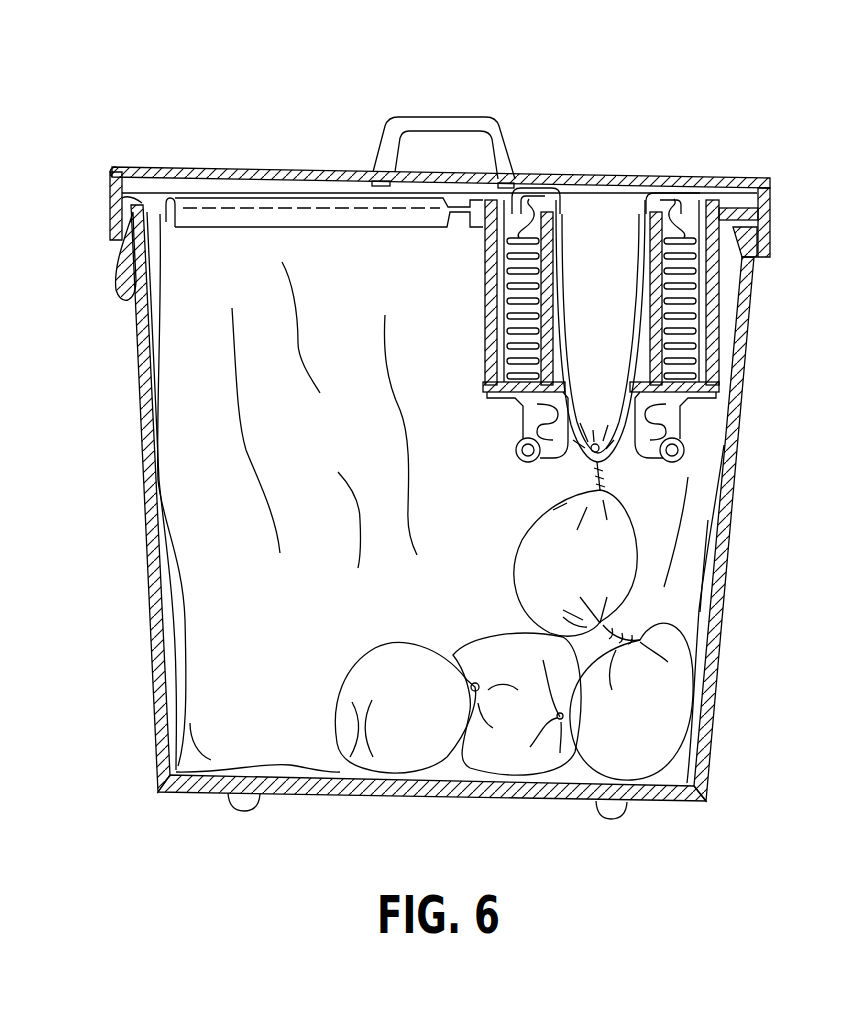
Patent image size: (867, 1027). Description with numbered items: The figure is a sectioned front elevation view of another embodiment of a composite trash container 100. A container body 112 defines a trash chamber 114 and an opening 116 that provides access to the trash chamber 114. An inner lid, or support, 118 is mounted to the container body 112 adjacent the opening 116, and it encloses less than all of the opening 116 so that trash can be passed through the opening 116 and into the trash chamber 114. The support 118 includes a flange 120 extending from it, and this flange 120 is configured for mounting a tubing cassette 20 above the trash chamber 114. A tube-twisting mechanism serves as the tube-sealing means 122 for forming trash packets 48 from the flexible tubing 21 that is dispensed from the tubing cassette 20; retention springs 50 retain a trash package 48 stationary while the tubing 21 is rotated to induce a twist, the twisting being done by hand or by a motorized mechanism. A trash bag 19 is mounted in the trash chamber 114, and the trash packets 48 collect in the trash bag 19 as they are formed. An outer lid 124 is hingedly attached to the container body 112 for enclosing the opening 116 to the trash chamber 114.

The composite trash container 100 is at (760, 131).
The outer lid 124 is at (153, 168).
The inner lid 118 is at (313, 194).
The flange 120 is at (493, 296).
The tubing cassette 20 is at (699, 194).
The flexible tubing 21 is at (612, 241).
The tube-sealing means 122 is at (790, 198).
The retention springs 50 is at (682, 454).
The trash packets 48 is at (590, 565).
The trash bag 19 is at (275, 631).
The opening 116 is at (182, 296).
The trash chamber 114 is at (178, 594).
The container body 112 is at (727, 556).